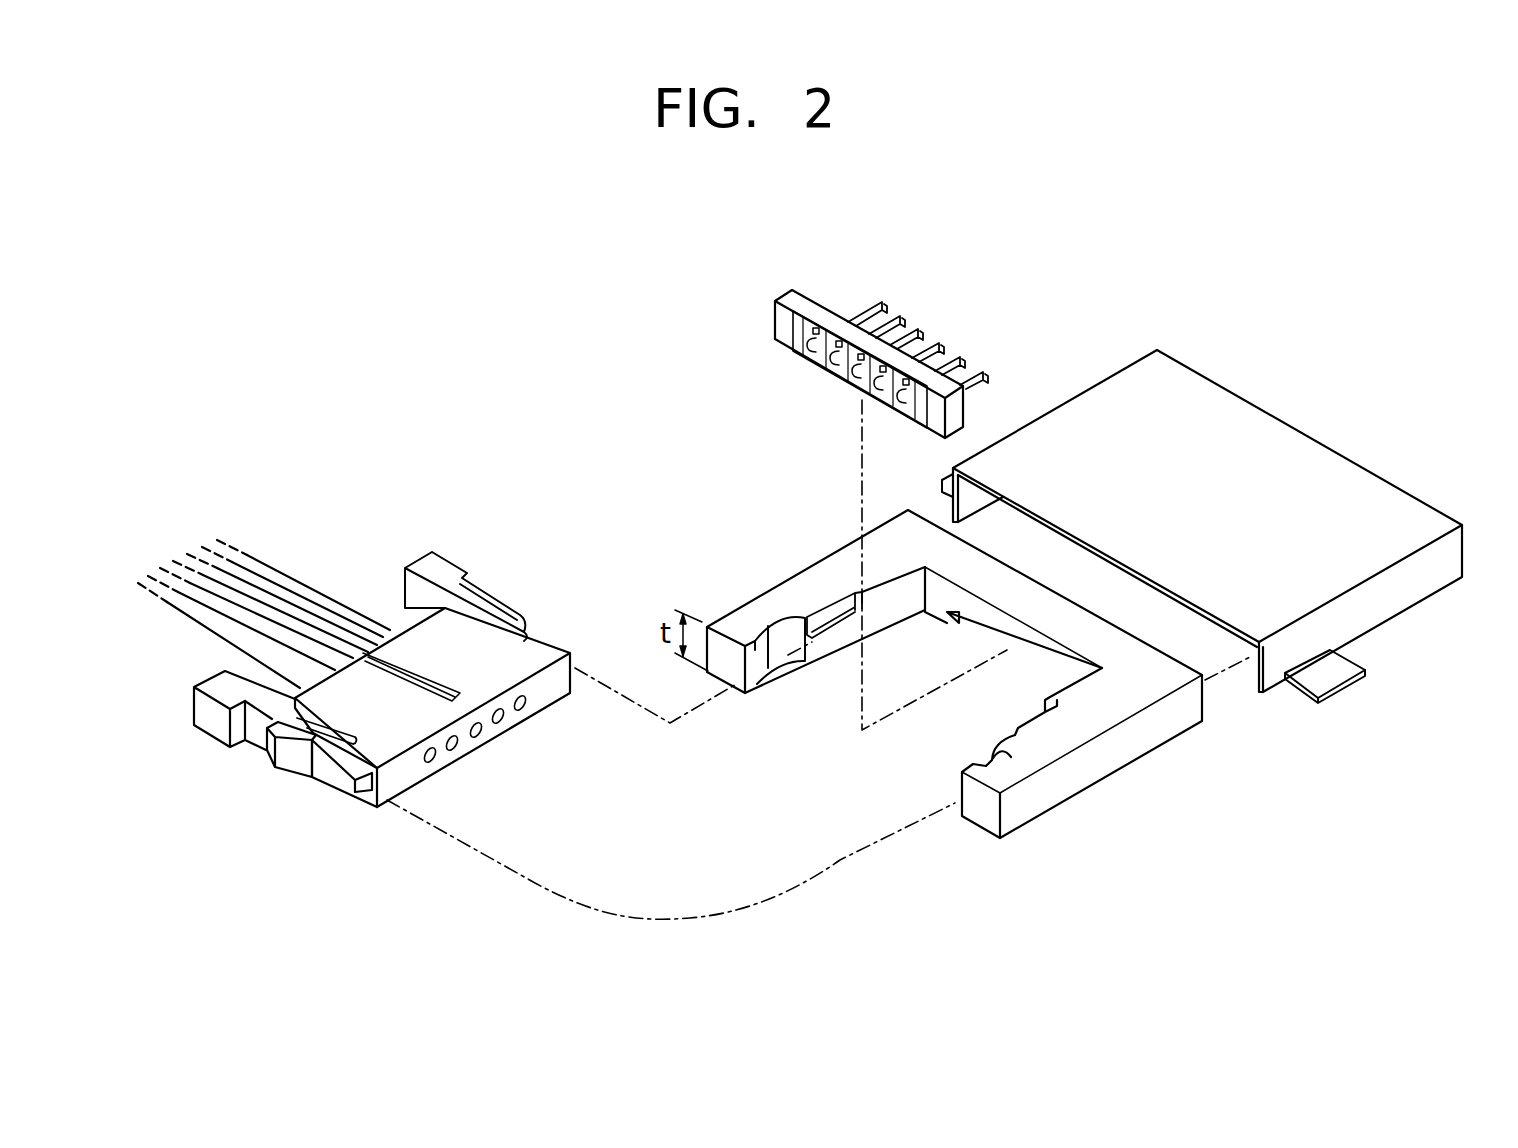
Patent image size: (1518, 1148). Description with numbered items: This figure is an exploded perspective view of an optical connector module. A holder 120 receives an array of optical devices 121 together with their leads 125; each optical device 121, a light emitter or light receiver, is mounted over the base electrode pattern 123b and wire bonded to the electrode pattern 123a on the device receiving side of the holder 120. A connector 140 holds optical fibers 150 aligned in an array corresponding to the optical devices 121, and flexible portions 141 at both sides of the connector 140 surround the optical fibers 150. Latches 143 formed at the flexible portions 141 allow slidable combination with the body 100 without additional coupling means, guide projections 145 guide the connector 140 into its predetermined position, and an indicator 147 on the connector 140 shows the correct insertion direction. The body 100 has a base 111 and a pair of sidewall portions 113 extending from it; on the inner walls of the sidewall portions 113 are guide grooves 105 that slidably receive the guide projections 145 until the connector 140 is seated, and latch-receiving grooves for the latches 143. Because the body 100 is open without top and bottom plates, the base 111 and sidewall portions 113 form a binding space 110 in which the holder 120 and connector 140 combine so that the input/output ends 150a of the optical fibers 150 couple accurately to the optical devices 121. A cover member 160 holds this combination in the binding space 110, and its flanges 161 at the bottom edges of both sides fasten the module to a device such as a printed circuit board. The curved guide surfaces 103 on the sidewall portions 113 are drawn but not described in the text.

The body 100 is at (1183, 736).
The curved recess 103 is at (782, 636).
The guide grooves 105 is at (828, 645).
The binding space 110 is at (989, 685).
The base 111 is at (1033, 600).
The sidewall portions 113 is at (813, 573).
The holder 120 is at (906, 296).
The optical device 121 is at (808, 357).
The electrode pattern 123a is at (818, 332).
The base electrode pattern 123b is at (803, 320).
The leads 125 is at (917, 330).
The connector 140 is at (553, 636).
The flexible portions 141 is at (216, 720).
The latches 143 is at (272, 740).
The guide projections 145 is at (338, 775).
The indicator 147 is at (405, 663).
The optical fibers 150 is at (203, 620).
The input/output ends 150a is at (478, 736).
The cover member 160 is at (1404, 617).
The flanges 161 is at (1327, 674).